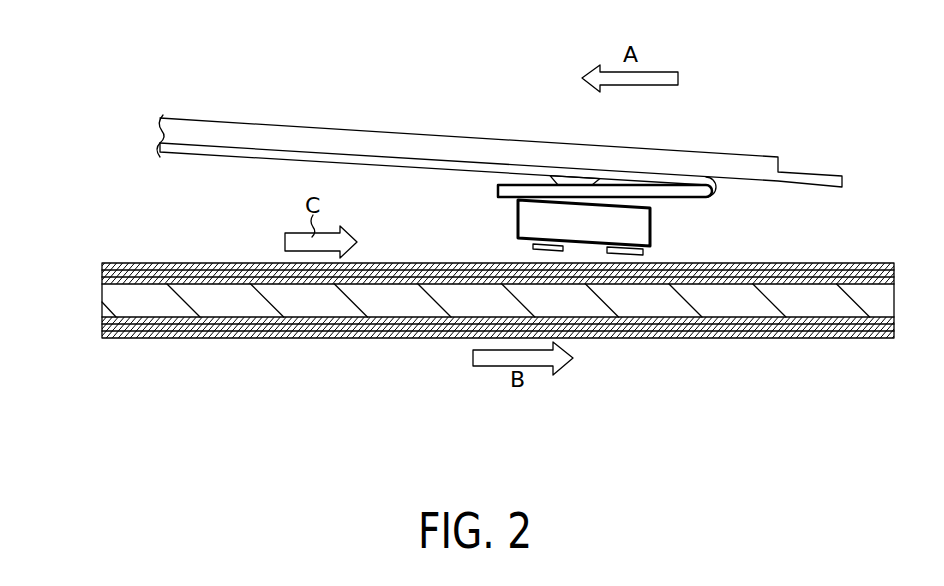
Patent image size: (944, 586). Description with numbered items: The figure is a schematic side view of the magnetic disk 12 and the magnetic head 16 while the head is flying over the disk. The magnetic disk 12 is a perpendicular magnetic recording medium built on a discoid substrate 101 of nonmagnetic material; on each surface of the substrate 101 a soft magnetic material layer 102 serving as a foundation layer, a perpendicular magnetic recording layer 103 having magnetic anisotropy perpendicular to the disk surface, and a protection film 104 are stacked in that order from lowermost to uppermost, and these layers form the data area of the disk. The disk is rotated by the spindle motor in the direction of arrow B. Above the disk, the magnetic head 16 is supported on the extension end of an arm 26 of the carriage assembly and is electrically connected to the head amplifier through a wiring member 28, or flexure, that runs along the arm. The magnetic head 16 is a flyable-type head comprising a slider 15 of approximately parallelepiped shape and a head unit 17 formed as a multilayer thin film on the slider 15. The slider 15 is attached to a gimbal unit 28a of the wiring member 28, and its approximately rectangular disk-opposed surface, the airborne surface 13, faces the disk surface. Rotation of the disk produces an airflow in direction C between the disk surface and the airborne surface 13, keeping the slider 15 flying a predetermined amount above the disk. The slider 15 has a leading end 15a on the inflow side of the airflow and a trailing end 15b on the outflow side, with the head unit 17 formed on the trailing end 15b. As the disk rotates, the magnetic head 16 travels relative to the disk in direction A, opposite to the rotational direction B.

The magnetic disk 12 is at (148, 248).
The disk-opposed surface (airborne surface, ABS) 13 is at (590, 252).
The slider 15 is at (588, 162).
The leading end 15a is at (513, 208).
The trailing end 15b is at (651, 223).
The magnetic head 16 is at (508, 220).
The head unit 17 is at (643, 256).
The arm (suspension) 26 is at (305, 137).
The wiring member (flexure) 28 is at (245, 160).
The gimbal unit 28a is at (551, 183).
The substrate 101 is at (227, 306).
The soft magnetic material layer 102 is at (107, 289).
The perpendicular magnetic recording layer 103 is at (185, 273).
The protection film 104 is at (103, 264).